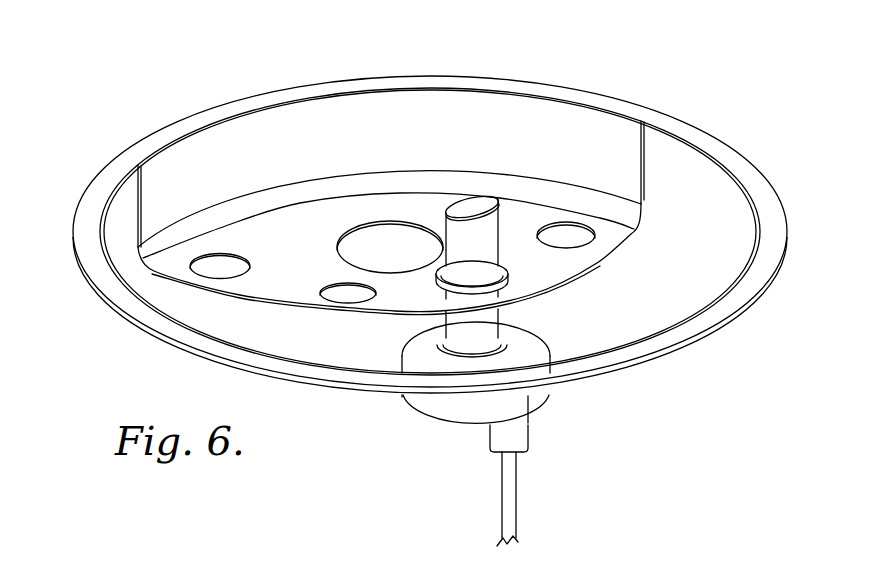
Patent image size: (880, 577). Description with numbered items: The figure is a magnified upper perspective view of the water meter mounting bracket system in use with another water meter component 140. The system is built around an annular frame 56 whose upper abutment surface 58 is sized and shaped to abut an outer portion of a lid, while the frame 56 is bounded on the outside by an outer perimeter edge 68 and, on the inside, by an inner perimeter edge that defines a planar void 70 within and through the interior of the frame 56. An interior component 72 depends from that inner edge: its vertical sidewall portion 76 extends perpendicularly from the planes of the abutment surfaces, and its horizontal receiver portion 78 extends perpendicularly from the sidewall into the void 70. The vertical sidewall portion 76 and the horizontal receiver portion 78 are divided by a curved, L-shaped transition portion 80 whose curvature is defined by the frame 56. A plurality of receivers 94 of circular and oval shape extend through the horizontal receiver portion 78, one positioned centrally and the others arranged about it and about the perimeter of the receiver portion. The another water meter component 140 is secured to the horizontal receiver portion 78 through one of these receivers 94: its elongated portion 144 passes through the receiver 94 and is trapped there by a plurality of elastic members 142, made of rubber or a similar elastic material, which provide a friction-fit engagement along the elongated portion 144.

The annular frame 56 is at (676, 112).
The upper abutment surface 58 is at (755, 184).
The outer perimeter edge 68 is at (773, 272).
The planar void 70 is at (692, 178).
The interior component 72 is at (378, 120).
The vertical sidewall portion 76 is at (172, 165).
The horizontal receiver portion 78 is at (288, 280).
The transition portion 80 is at (165, 248).
The receivers 94 is at (238, 263).
The another water meter component 140 is at (565, 412).
The elastic members 142 is at (455, 307).
The elongated portion 144 is at (465, 323).